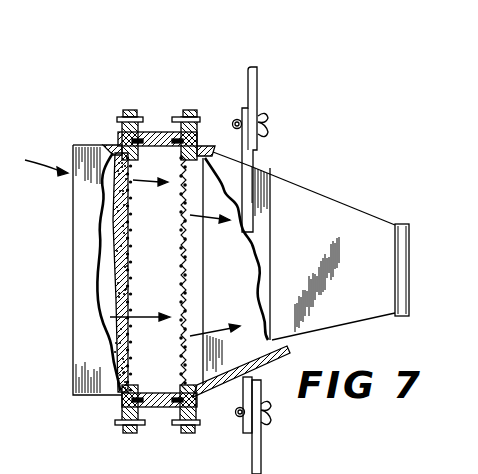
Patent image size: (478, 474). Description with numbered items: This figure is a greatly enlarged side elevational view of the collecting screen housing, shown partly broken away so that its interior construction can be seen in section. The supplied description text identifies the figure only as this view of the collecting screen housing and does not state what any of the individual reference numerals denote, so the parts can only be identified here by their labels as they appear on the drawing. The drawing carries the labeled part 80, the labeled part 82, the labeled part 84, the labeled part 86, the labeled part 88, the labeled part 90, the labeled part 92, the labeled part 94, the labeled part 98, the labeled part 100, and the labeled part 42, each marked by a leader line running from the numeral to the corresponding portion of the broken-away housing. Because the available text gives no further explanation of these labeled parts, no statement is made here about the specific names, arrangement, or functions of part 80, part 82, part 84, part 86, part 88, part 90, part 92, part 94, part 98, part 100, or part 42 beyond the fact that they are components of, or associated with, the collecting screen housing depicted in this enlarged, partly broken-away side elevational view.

The plenum assembly 80 is at (213, 122).
The tapered duct 82 is at (356, 208).
The insulation layer 84 is at (127, 270).
The screen 86 is at (181, 337).
The bolt 88 is at (193, 430).
The bottom flange plate 90 is at (160, 410).
The outer wall 92 is at (75, 385).
The flexible skirt 94 is at (250, 193).
The mounting plate 98 is at (258, 77).
The liner 100 is at (112, 250).
The flange 42 is at (176, 356).